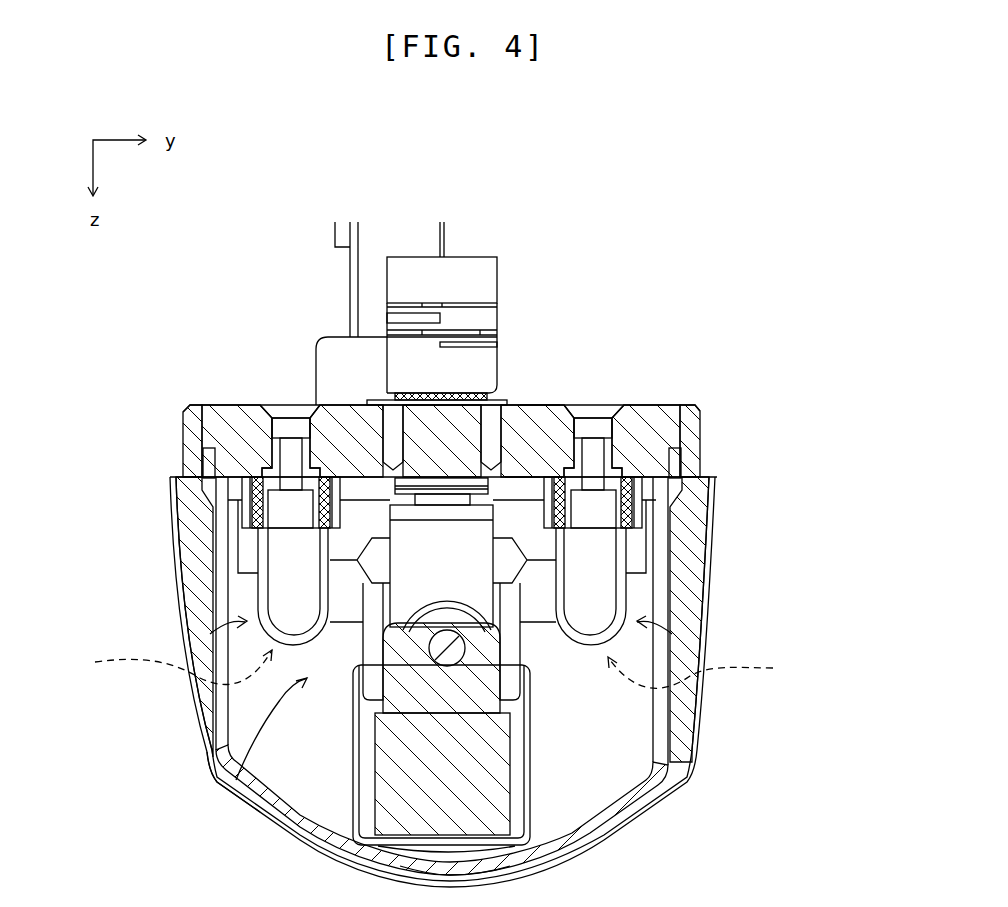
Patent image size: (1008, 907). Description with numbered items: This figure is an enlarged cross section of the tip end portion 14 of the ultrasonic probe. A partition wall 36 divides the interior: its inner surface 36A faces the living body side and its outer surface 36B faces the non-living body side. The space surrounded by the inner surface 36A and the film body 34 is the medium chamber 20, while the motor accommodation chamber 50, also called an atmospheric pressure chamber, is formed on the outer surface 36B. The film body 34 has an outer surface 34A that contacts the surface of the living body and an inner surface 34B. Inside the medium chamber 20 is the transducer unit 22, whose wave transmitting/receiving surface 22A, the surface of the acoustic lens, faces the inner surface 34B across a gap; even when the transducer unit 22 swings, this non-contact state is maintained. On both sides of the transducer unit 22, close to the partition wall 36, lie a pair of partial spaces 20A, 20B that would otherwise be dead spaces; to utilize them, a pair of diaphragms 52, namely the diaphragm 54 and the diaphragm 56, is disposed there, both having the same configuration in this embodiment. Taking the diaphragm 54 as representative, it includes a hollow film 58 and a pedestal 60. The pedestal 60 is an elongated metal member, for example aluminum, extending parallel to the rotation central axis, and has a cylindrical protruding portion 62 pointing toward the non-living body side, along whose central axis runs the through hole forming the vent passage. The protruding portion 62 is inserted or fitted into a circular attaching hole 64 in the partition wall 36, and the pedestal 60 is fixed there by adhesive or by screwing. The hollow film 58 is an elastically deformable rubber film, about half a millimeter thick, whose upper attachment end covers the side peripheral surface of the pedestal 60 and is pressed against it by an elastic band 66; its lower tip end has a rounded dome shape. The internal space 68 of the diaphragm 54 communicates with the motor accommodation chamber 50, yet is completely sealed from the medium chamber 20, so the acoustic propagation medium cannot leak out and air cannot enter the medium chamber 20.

The tip end portion 14 is at (780, 466).
The medium chamber 20 is at (303, 736).
The partial space 20A is at (161, 667).
The partial space 20B is at (714, 672).
The transducer unit 22 is at (357, 774).
The wave transmitting/receiving surface 22A is at (387, 857).
The film body 34 is at (655, 835).
The outer surface 34A is at (562, 848).
The inner surface 34B is at (630, 798).
The partition wall 36 is at (650, 400).
The inner surface 36A is at (538, 405).
The outer surface 36B is at (516, 478).
The motor accommodation chamber 50 is at (283, 329).
The pair of diaphragms 52 is at (230, 792).
The diaphragm 54 is at (222, 632).
The diaphragm 56 is at (655, 636).
The hollow film 58 is at (215, 586).
The pedestal 60 is at (282, 528).
The protruding portion 62 is at (285, 440).
The attaching hole 64 is at (282, 435).
The band 66 is at (193, 478).
The internal space 68 is at (279, 612).